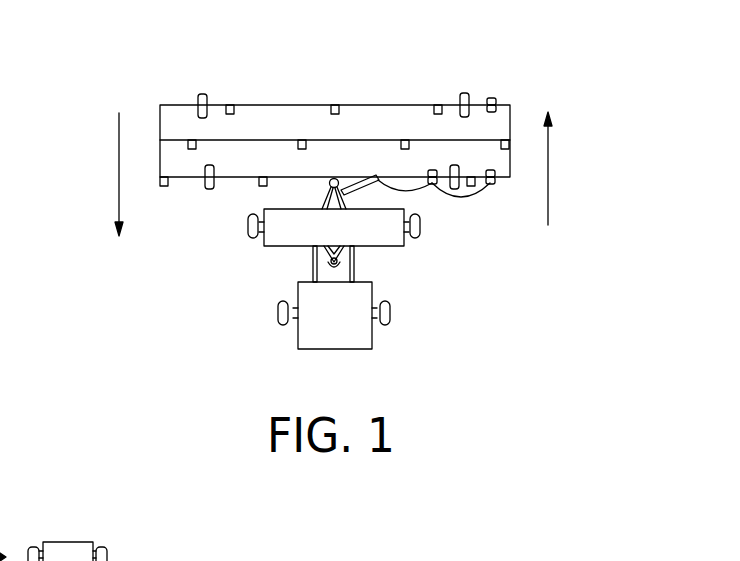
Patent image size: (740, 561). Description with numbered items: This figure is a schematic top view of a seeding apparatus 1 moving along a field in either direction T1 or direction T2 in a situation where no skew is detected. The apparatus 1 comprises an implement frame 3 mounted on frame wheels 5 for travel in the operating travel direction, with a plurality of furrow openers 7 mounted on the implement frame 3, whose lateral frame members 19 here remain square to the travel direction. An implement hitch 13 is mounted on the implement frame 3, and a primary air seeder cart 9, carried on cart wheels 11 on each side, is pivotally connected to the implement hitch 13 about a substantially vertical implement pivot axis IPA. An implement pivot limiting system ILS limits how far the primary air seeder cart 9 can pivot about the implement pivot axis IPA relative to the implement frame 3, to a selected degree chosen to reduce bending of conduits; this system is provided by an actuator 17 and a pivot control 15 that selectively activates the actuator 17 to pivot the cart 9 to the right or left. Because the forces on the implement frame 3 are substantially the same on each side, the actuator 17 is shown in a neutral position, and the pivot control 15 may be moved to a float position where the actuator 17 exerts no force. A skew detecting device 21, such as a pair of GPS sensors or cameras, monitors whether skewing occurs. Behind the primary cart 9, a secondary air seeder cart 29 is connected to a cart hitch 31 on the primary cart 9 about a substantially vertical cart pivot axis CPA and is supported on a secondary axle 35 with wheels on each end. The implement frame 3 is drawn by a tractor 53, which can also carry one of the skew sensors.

The seeding apparatus 1 is at (590, 89).
The implement frame 3 is at (160, 105).
The frame wheels 5 is at (203, 93).
The furrow openers 7 is at (335, 103).
The primary air seeder cart 9 is at (385, 247).
The cart wheels 11 is at (421, 229).
The implement hitch 13 is at (329, 185).
The pivot control 15 is at (432, 170).
The actuator 17 is at (380, 192).
The lateral frame members 19 is at (183, 178).
The skew detecting device 21 is at (490, 170).
The secondary air seeder cart 29 is at (343, 349).
The cart hitch 31 is at (313, 256).
The secondary axle 35 is at (291, 326).
The tractor 53 is at (62, 541).
The implement pivot axis IPA is at (337, 180).
The implement pivot limiting system ILS is at (333, 208).
The cart pivot axis CPA is at (352, 259).
The direction T1 is at (549, 175).
The direction T2 is at (118, 169).